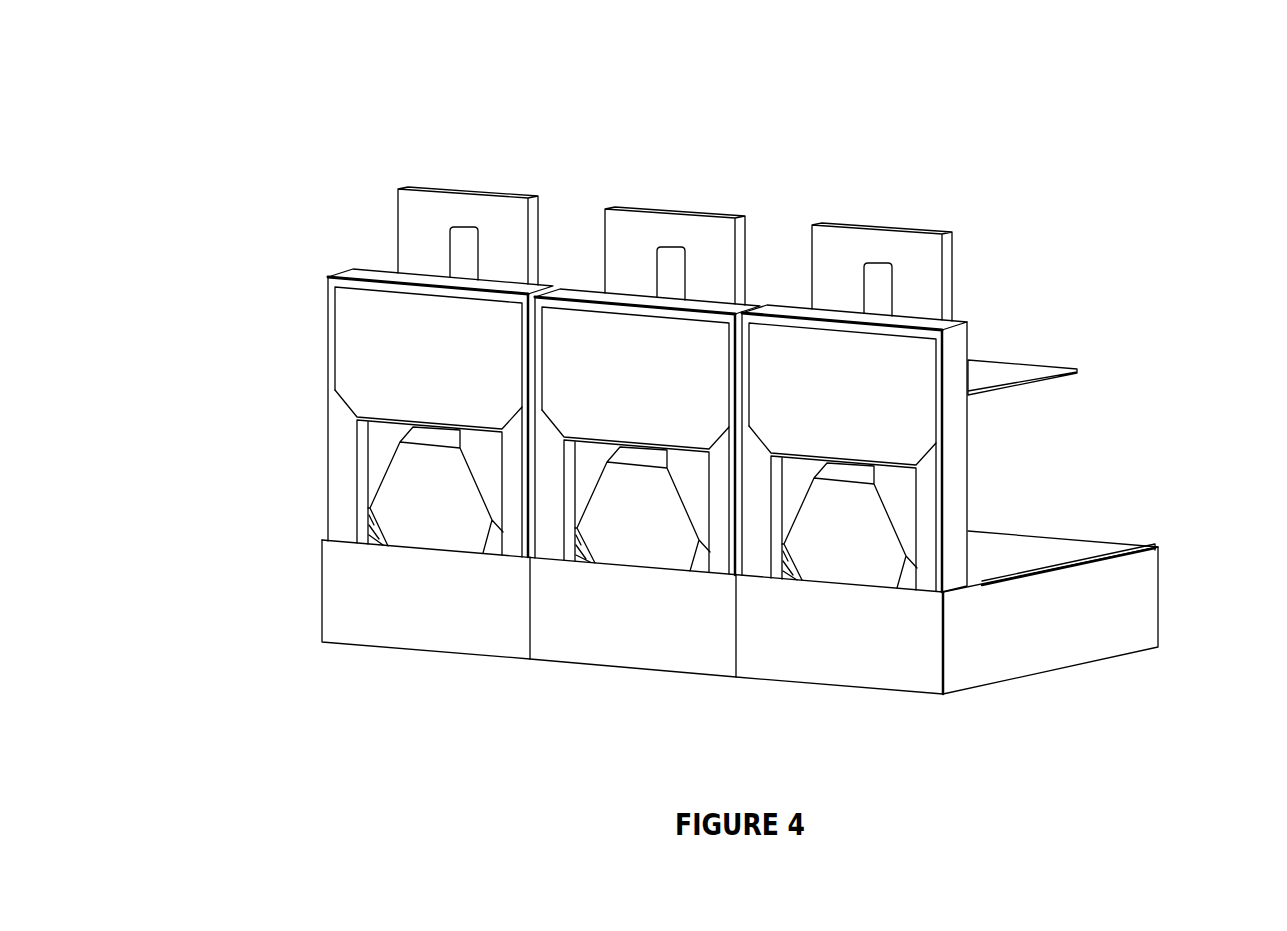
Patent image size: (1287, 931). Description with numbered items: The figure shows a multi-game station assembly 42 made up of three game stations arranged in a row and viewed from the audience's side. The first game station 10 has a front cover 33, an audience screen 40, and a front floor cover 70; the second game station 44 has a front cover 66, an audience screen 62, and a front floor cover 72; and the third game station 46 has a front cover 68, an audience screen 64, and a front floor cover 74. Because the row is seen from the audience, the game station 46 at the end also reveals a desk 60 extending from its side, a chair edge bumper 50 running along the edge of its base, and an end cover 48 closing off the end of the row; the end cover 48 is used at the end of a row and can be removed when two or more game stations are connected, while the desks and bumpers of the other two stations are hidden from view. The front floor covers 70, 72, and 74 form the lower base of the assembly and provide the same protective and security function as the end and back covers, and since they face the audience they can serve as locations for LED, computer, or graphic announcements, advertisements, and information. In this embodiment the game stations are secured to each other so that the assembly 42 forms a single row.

The multi-game station assembly 42 is at (298, 109).
The game station 10 is at (362, 262).
The game station 44 is at (582, 282).
The game station 46 is at (779, 297).
The audience screen 62 is at (616, 345).
The audience screen 40 is at (413, 372).
The front cover 33 is at (343, 470).
The desk 60 is at (1007, 370).
The audience screen 64 is at (888, 403).
The front cover 68 is at (930, 528).
The chair edge bumper 50 is at (1158, 557).
The end cover 48 is at (1050, 653).
The front floor cover 70 is at (427, 610).
The front floor cover 72 is at (587, 642).
The front floor cover 74 is at (823, 660).
The front cover 66 is at (553, 543).